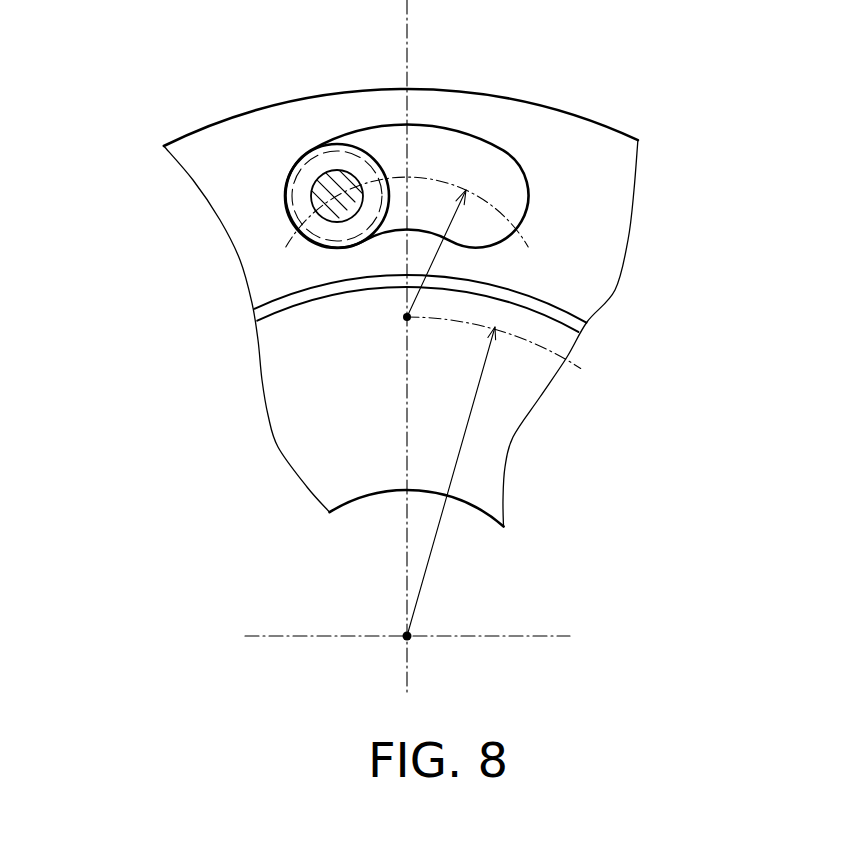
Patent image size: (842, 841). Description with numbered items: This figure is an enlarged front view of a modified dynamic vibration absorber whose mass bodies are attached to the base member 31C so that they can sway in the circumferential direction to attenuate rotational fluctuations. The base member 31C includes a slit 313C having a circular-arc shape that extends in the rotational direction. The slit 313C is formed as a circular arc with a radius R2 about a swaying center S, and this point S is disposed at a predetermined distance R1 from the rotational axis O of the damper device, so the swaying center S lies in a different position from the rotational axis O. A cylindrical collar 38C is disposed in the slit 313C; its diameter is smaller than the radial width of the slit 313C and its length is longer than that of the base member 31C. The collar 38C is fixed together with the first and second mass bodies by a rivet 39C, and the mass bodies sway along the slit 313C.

The base member 31C is at (587, 106).
The slit 313C is at (513, 156).
The collar 38C is at (293, 197).
The rivet 39C is at (336, 205).
The swaying center S is at (407, 317).
The rotational axis O is at (408, 636).
The predetermined distance R1 is at (494, 476).
The radius R2 is at (444, 253).